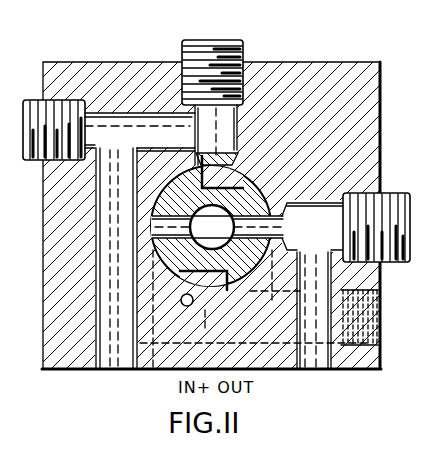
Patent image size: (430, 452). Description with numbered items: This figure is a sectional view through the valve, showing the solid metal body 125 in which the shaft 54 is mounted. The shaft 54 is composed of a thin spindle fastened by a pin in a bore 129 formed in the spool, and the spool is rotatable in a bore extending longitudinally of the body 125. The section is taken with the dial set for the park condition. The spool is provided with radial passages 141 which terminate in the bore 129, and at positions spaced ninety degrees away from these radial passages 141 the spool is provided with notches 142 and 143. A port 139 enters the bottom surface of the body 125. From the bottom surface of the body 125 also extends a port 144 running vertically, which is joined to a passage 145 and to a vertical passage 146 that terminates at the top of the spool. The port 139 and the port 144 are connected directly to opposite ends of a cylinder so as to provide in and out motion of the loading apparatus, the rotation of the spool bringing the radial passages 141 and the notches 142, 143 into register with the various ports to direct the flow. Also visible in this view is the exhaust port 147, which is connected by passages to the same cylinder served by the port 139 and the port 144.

The body 125 is at (352, 72).
The passage 145 is at (106, 118).
The vertical passage 146 is at (204, 163).
The notch 142 is at (215, 216).
The shaft 54 is at (255, 207).
The bore 129 is at (178, 197).
The radial passages 141 is at (160, 232).
The notch 143 is at (216, 278).
The port 144 is at (100, 366).
The port 139 is at (328, 366).
The exhaust port 147 is at (383, 328).